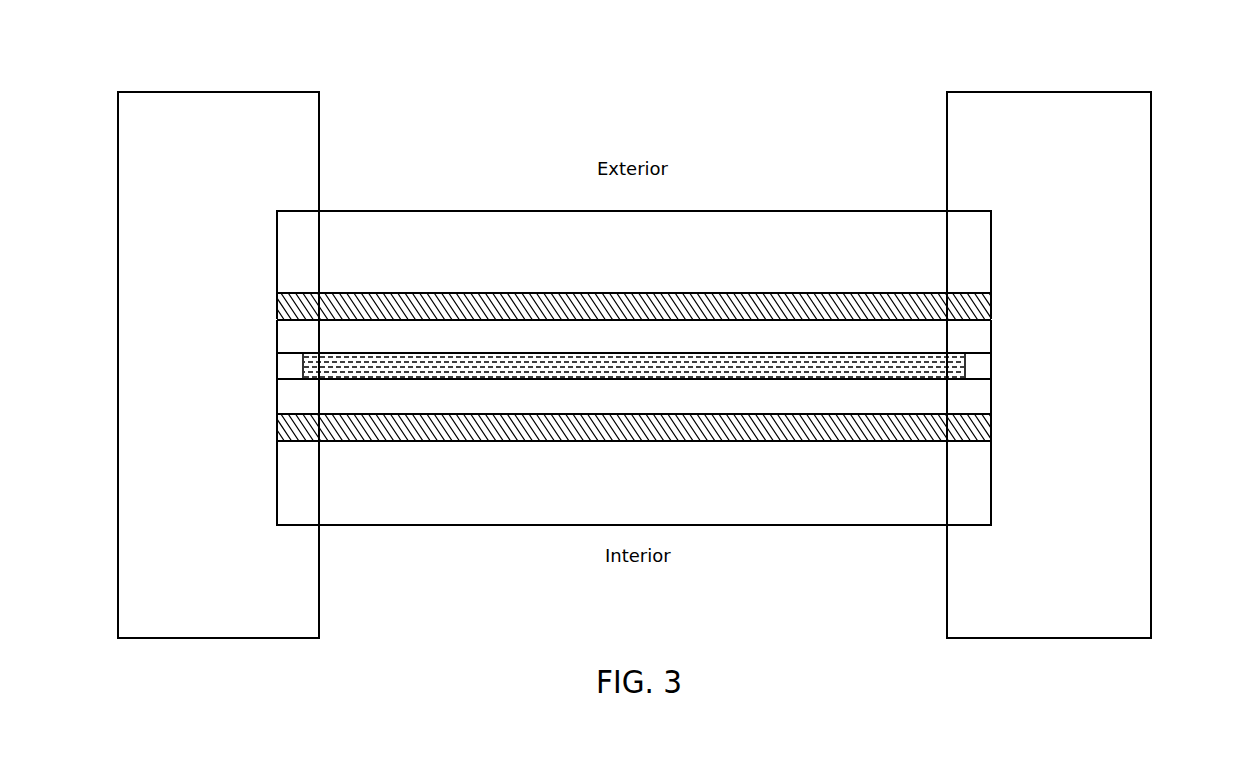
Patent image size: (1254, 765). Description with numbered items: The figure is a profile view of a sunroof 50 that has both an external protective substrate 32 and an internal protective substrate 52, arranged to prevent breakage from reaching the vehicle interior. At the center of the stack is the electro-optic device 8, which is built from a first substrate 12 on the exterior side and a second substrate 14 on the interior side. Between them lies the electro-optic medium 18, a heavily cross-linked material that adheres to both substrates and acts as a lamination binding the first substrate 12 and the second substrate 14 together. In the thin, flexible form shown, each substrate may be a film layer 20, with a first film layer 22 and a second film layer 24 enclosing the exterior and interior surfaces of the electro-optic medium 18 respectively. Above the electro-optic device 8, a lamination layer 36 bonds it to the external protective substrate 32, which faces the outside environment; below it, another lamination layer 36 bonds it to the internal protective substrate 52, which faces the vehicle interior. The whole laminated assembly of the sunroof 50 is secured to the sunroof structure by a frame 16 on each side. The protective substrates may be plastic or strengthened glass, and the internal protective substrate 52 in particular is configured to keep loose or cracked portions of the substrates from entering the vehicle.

The electro-optic device 8 is at (806, 335).
The first substrate 12 is at (420, 330).
The second substrate 14 is at (492, 398).
The frame 16 is at (135, 372).
The electro-optic medium 18 is at (685, 365).
The film layer 20 is at (980, 334).
The first film layer 22 is at (689, 373).
The second film layer 24 is at (983, 397).
The external protective substrate 32 is at (478, 252).
The lamination layer 36 is at (702, 293).
The sunroof 50 is at (818, 94).
The internal protective substrate 52 is at (832, 502).